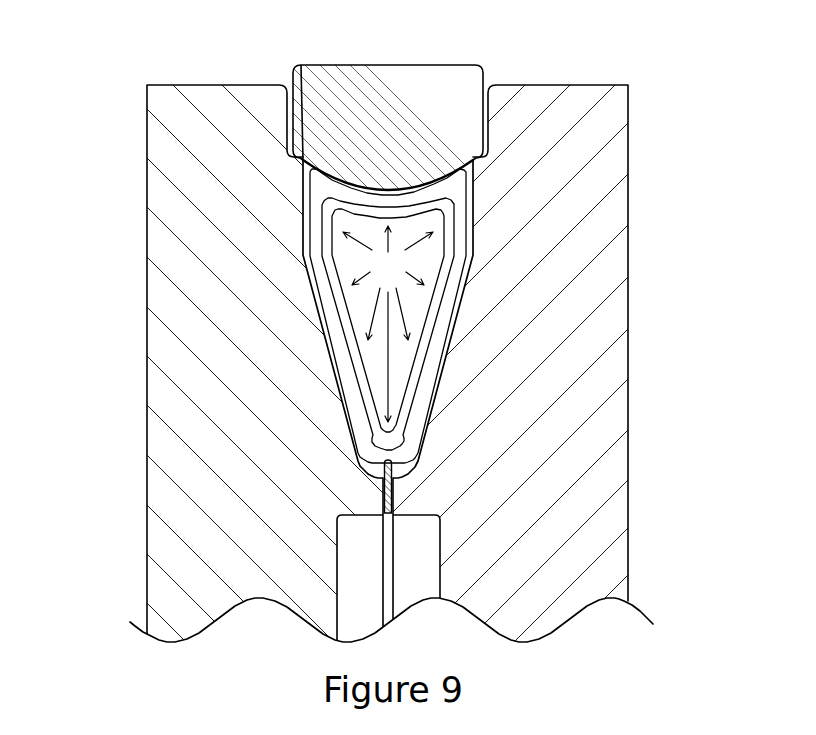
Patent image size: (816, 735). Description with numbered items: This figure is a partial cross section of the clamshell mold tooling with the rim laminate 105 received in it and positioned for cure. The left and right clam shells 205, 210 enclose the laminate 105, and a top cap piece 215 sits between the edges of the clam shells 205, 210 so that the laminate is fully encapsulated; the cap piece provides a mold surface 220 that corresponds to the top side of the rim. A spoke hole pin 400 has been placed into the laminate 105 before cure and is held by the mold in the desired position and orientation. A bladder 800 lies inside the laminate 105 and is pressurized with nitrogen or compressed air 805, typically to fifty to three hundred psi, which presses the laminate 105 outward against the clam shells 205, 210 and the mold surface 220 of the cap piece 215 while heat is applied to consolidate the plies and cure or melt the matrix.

The rim laminate 105 is at (302, 176).
The left clam shell 205 is at (176, 394).
The right clam shell 210 is at (600, 283).
The top cap piece 215 is at (427, 77).
The mold surface 220 is at (385, 188).
The spoke hole pin 400 is at (383, 495).
The bladder 800 is at (452, 226).
The compressed air 805 is at (372, 274).